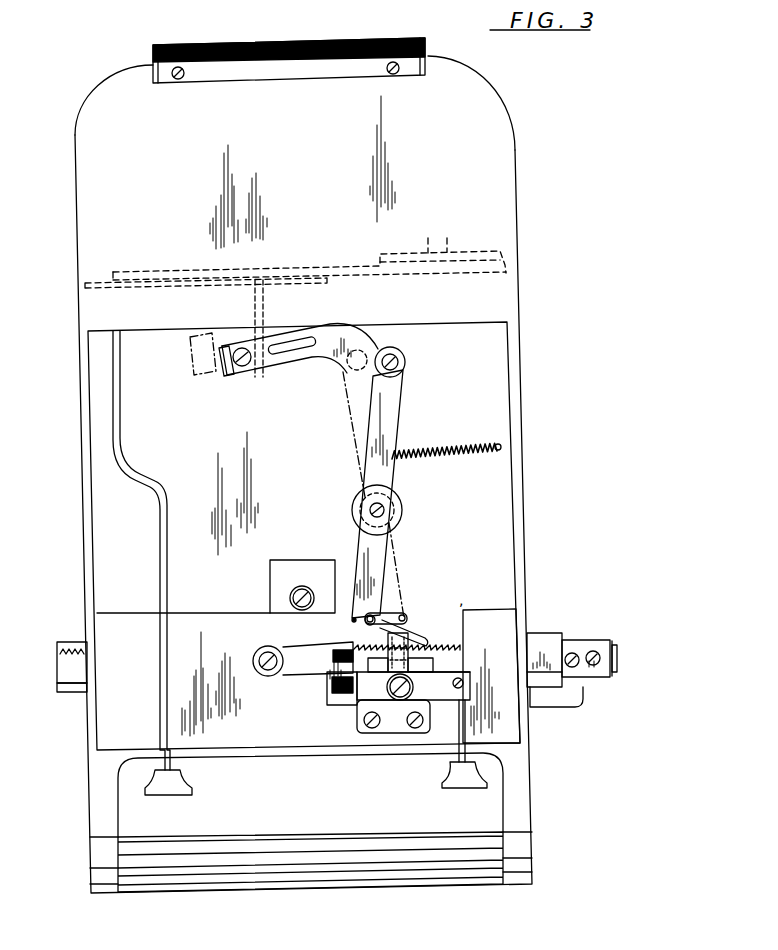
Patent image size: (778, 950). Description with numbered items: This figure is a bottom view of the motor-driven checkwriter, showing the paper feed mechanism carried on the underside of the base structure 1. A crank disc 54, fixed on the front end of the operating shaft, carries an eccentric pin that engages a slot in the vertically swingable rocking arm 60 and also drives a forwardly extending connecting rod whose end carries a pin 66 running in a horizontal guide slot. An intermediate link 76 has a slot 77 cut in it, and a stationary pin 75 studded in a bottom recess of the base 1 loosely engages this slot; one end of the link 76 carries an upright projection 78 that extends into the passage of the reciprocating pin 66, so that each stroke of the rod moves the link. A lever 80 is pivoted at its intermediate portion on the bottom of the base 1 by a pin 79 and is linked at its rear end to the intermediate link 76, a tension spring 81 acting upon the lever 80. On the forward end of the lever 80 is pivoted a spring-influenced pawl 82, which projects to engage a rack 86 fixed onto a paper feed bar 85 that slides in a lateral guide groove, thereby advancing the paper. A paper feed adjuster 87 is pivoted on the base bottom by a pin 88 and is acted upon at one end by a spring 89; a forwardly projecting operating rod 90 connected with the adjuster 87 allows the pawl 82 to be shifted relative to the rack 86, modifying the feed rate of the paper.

The base structure 1 is at (77, 432).
The crank disc 54 is at (508, 262).
The rocking arm 60 is at (157, 513).
The pin 66 is at (262, 377).
The stationary pin 75 is at (240, 368).
The intermediate link 76 is at (380, 350).
The slot 77 is at (298, 350).
The upright projection 78 is at (222, 372).
The pin 79 is at (386, 512).
The lever 80 is at (396, 402).
The tension spring 81 is at (472, 457).
The pawl 82 is at (410, 633).
The paper feed bar 85 is at (67, 690).
The rack 86 is at (447, 658).
The paper feed adjuster 87 is at (400, 612).
The pin 88 is at (402, 700).
The spring 89 is at (337, 706).
The operating rod 90 is at (455, 730).